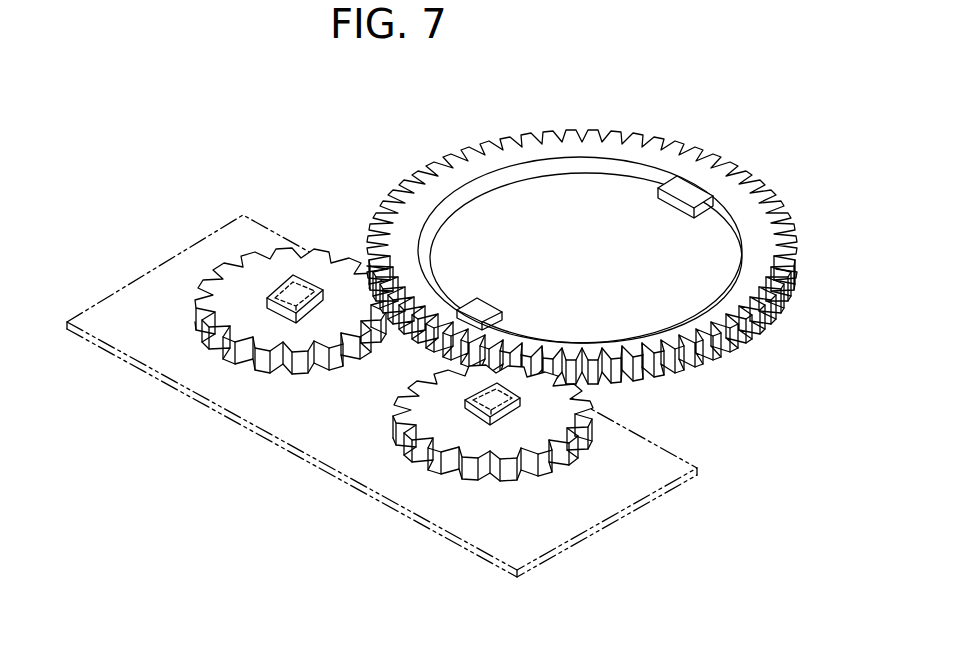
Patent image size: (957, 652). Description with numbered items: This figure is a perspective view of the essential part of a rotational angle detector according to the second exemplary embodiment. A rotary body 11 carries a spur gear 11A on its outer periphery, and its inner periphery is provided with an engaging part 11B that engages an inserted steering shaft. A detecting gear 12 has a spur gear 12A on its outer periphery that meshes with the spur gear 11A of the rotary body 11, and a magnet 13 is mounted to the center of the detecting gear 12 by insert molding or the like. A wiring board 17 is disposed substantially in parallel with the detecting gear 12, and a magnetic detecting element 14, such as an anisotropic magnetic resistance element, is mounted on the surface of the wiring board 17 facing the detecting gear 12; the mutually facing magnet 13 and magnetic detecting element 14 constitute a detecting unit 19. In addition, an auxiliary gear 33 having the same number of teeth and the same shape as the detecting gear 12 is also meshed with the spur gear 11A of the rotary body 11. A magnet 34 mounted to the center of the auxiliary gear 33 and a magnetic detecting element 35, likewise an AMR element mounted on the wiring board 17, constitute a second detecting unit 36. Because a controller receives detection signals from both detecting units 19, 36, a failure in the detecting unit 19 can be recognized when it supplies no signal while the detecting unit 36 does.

The rotary body 11 is at (582, 258).
The spur gear 11A is at (715, 353).
The engaging part 11B is at (677, 203).
The detecting gear 12 is at (290, 254).
The spur gear 12A is at (333, 253).
The magnet 13 is at (278, 324).
The magnetic detecting element 14 is at (267, 298).
The detecting unit 19 is at (184, 390).
The wiring board 17 is at (528, 533).
The auxiliary gear 33 is at (548, 425).
The magnet 34 is at (483, 403).
The magnetic detecting element 35 is at (467, 405).
The detecting unit 36 is at (400, 503).